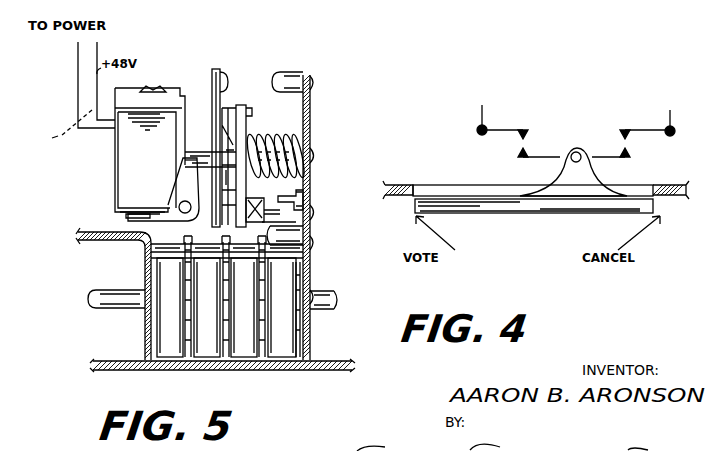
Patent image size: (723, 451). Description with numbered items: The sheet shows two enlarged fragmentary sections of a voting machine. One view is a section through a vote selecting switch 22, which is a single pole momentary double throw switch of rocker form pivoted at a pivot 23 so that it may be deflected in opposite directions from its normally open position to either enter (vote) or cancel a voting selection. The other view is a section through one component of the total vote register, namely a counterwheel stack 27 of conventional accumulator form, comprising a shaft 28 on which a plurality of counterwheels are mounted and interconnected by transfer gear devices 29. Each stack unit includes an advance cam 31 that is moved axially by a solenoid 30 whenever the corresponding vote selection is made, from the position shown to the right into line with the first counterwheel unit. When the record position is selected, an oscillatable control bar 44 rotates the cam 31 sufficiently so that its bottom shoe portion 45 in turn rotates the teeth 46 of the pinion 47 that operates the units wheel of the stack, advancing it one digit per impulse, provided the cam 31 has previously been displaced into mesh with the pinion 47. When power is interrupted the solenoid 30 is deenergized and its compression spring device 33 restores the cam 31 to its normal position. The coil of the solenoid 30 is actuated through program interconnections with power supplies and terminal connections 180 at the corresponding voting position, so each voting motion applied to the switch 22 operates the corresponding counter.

In FIG. 5, the terminal connections 180 is at (77, 50).
In FIG. 5, the solenoid 30 is at (150, 190).
In FIG. 5, the oscillatable control bar 44 is at (212, 82).
In FIG. 5, the advance cam 31 is at (247, 121).
In FIG. 5, the compression spring device 33 is at (272, 134).
In FIG. 5, the bottom shoe portion 45 is at (256, 214).
In FIG. 5, the teeth 46 is at (306, 197).
In FIG. 5, the pinion 47 is at (303, 240).
In FIG. 5, the transfer gear devices 29 is at (185, 236).
In FIG. 5, the drive shaft 28 is at (118, 290).
In FIG. 5, the counterwheel stack 27 is at (212, 362).
In FIG. 4, the pivot 23 is at (573, 150).
In FIG. 4, the vote selecting switch 22 is at (570, 208).